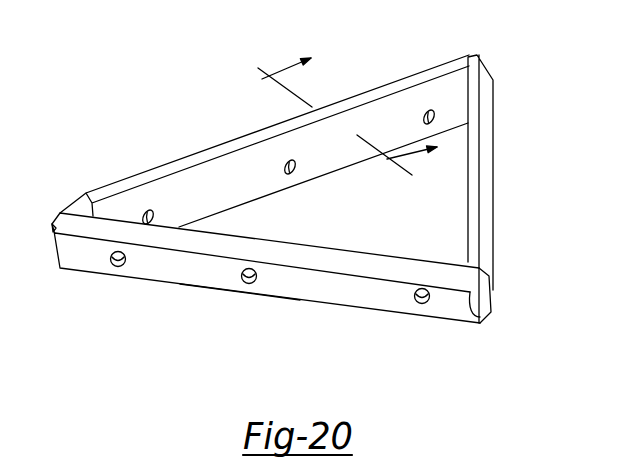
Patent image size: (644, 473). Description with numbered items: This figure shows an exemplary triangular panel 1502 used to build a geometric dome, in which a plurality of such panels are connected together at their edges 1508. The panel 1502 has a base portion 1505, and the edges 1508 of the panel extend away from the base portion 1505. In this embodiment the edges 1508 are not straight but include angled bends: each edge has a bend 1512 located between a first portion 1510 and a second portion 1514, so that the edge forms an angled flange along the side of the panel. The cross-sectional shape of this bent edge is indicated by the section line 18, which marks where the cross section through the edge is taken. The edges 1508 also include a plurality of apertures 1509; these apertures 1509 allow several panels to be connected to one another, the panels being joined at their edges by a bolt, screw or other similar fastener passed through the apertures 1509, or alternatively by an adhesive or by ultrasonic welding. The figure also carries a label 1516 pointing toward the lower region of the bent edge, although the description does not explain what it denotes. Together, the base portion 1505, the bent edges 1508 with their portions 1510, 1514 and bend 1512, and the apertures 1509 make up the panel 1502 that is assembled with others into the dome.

The panel 1502 is at (326, 205).
The base portion 1505 is at (452, 173).
The edges 1508 is at (112, 185).
The apertures 1509 is at (252, 282).
The portion 1510 is at (450, 277).
The bend 1512 is at (495, 308).
The portion 1514 is at (445, 306).
The bottom edge 1516 is at (252, 304).
The section line 18- 18 is at (333, 129).